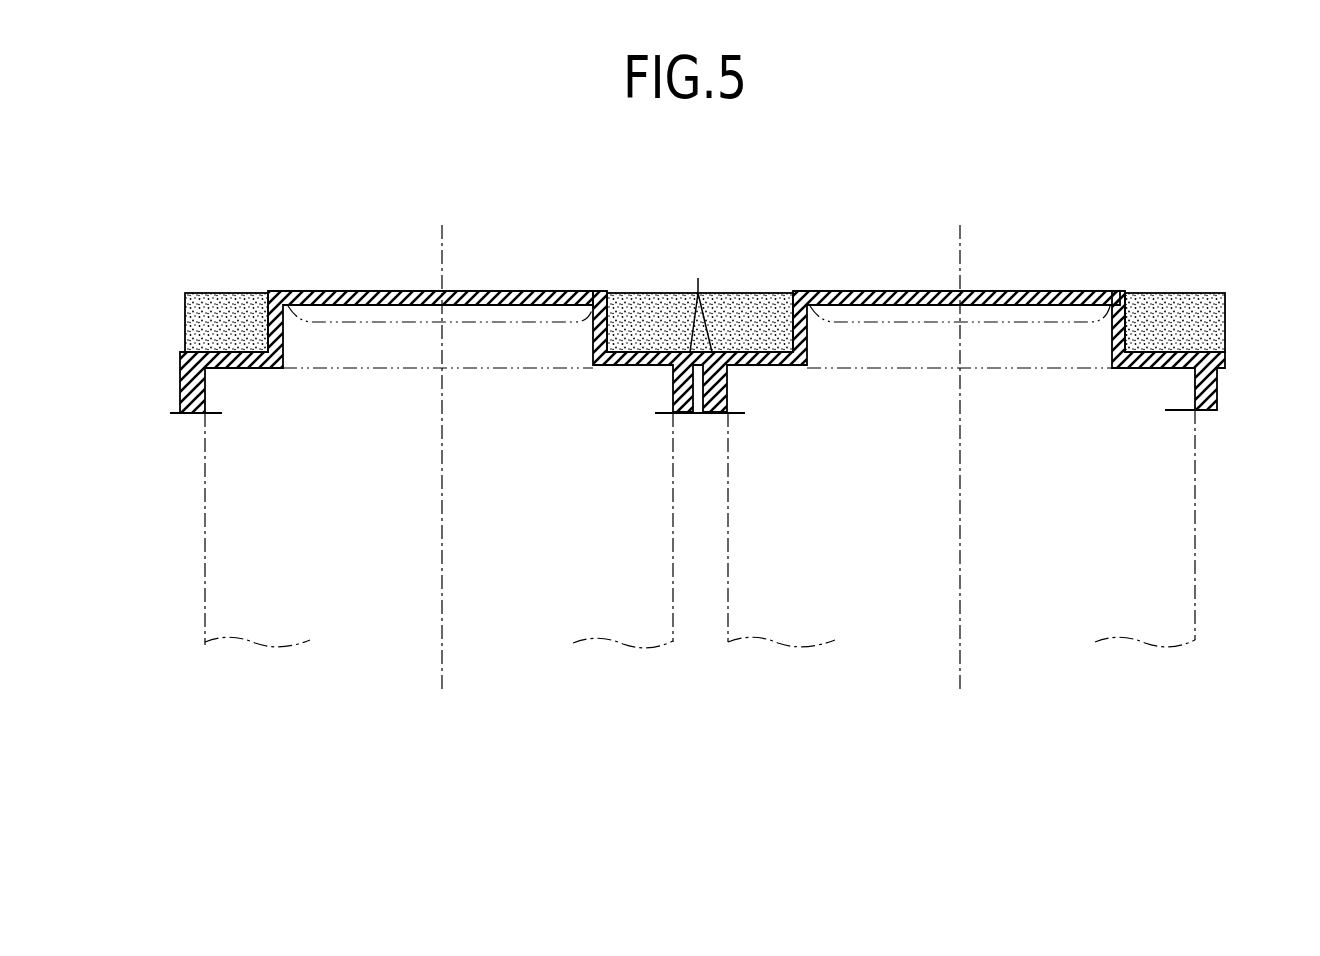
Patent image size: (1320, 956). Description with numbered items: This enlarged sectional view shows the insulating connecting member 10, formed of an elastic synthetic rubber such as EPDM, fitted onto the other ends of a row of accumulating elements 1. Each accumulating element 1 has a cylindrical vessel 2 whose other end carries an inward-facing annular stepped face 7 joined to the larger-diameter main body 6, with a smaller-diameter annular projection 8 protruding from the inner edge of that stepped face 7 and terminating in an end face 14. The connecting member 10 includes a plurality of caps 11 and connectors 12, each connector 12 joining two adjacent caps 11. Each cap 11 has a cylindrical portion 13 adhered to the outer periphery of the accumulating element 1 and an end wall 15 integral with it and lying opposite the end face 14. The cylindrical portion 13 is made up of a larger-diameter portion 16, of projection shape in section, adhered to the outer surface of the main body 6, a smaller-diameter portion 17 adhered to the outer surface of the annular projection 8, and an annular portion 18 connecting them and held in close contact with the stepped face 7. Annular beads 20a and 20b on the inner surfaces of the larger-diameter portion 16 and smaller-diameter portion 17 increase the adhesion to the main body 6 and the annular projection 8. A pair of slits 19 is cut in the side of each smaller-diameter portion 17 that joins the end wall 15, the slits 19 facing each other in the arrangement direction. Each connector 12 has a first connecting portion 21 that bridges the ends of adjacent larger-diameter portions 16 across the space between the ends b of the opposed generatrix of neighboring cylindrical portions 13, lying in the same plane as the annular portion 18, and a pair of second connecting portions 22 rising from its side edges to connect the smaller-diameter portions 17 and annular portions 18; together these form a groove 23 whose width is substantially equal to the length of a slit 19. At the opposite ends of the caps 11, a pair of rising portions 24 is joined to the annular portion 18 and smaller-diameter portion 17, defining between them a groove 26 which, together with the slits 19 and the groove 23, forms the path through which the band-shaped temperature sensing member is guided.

The accumulating element 1 is at (200, 478).
The cylindrical vessel 2 is at (203, 586).
The larger-diameter main body 6 is at (205, 527).
The annular stepped face 7 is at (248, 370).
The annular projection 8 is at (471, 357).
The insulating connecting member 10 is at (739, 301).
The cap 11 is at (490, 290).
The connector 12 is at (1215, 290).
The cylindrical portion 13 is at (178, 380).
The end face 14 is at (340, 320).
The end wall 15 is at (370, 292).
The larger-diameter portion 16 is at (178, 390).
The smaller-diameter portion 17 is at (268, 337).
The annular portion 18 is at (222, 342).
The slit 19 is at (272, 305).
The annular bead 20a is at (207, 392).
The annular bead 20b is at (285, 340).
The first connecting portion 21 is at (690, 387).
The second connecting portion 22 is at (750, 292).
The groove 23 is at (610, 353).
The rising portion 24 is at (213, 293).
The groove 26 is at (220, 320).
The ends of opposed generatrix b is at (701, 302).